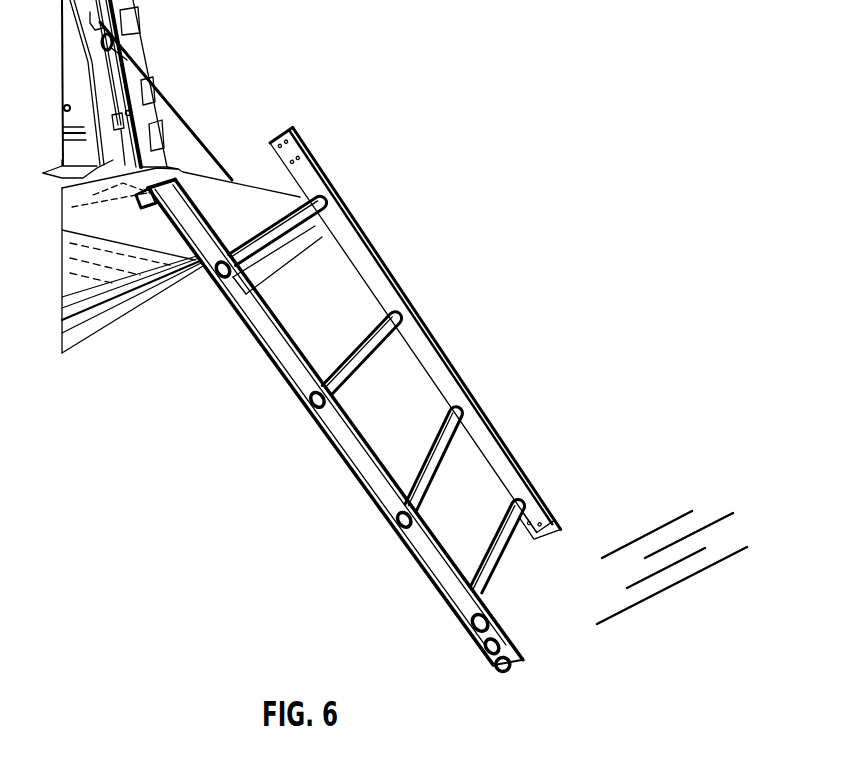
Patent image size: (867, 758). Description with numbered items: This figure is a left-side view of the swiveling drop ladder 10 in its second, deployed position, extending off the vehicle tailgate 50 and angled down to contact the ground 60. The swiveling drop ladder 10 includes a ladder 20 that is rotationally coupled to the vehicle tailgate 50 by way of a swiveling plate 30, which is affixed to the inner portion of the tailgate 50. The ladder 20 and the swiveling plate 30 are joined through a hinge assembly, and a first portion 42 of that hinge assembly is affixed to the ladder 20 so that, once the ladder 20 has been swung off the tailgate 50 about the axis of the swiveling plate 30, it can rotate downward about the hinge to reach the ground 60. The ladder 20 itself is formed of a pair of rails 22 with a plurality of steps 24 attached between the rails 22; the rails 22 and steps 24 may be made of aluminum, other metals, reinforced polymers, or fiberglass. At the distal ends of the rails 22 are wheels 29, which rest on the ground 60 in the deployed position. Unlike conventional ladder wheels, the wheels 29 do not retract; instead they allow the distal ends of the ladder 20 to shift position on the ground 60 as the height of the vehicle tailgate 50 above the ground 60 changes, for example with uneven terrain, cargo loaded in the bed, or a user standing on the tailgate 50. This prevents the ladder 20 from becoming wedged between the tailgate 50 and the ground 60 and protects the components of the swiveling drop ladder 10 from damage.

The swiveling drop ladder 10 is at (505, 121).
The ladder 20 is at (457, 341).
The rails 22 is at (497, 442).
The steps 24 is at (503, 580).
The wheels 29 is at (510, 678).
The swiveling plate 30 is at (247, 203).
The first portion of the hinge assembly 42 is at (305, 236).
The vehicle tailgate 50 is at (80, 248).
The ground 60 is at (746, 609).